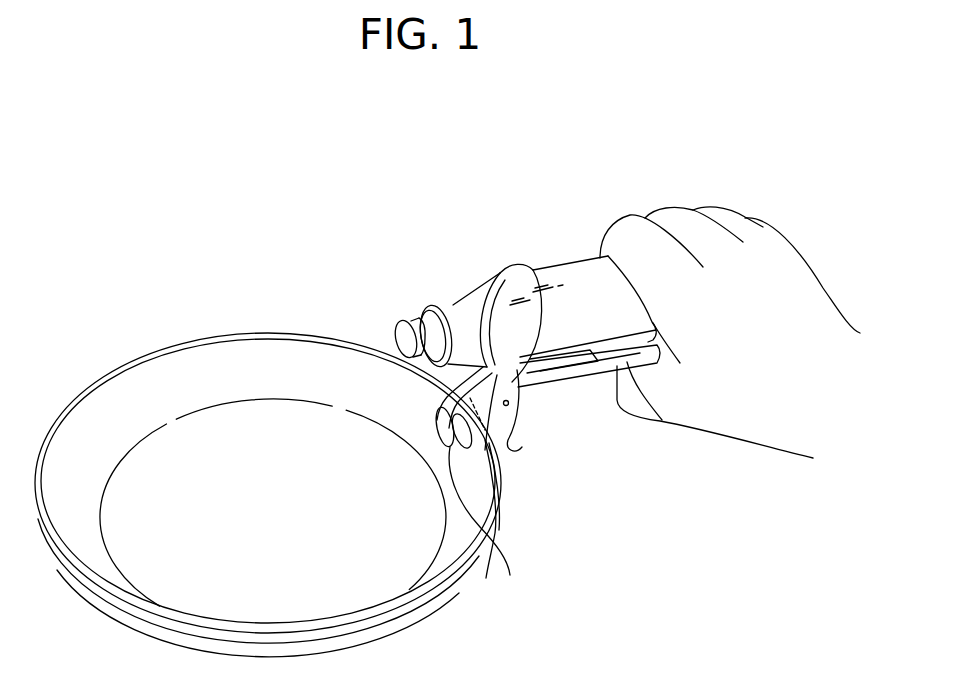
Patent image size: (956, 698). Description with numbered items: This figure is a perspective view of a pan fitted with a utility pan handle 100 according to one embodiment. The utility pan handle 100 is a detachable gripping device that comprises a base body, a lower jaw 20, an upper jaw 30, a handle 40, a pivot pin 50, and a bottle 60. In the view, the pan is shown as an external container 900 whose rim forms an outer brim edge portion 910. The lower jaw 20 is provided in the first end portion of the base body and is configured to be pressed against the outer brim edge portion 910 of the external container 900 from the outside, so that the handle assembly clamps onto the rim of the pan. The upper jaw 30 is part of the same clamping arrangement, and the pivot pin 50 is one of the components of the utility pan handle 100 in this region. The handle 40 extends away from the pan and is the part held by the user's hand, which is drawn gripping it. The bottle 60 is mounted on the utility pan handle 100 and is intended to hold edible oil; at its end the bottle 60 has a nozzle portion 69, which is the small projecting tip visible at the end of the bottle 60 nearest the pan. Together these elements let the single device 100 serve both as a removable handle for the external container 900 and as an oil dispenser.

The utility pan handle 100 is at (592, 357).
The nozzle portion 69 is at (403, 308).
The bottle 60 is at (590, 270).
The pivot pin 50 is at (509, 403).
The handle 40 is at (662, 420).
The lower jaw 20 is at (502, 445).
The upper jaw 30 is at (458, 447).
The external container 900 is at (268, 431).
The outer brim edge portion 910 is at (265, 333).